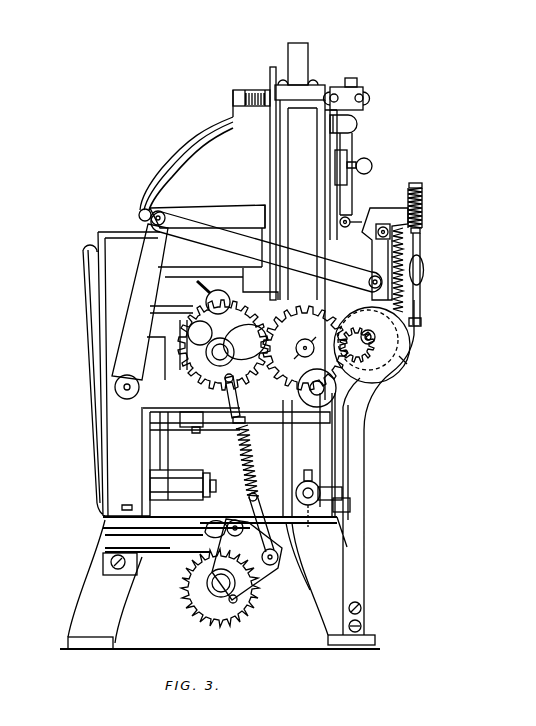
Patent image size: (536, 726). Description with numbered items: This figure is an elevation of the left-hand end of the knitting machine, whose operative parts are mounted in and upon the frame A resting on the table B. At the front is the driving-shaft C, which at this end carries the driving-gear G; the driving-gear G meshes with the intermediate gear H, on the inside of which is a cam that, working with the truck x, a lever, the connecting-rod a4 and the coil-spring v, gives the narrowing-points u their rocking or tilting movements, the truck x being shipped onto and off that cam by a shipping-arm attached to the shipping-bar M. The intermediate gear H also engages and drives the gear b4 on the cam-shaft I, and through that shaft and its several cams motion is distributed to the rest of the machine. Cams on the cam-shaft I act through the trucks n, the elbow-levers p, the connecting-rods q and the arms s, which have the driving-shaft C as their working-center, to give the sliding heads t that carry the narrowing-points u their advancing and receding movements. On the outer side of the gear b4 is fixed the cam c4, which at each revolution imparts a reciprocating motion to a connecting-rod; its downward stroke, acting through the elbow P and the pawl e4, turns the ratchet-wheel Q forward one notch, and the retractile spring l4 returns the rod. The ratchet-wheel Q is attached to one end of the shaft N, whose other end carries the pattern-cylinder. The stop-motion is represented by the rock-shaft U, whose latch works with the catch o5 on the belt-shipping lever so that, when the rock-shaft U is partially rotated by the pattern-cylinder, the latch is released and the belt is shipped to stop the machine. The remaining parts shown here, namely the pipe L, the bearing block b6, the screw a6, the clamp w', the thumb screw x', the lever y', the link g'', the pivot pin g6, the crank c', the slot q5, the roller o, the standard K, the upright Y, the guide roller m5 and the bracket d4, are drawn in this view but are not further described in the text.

The frame A is at (237, 346).
The pipe L is at (200, 135).
The bearing block b6 is at (347, 98).
The adjusting screw a6 is at (354, 74).
The clamp w' is at (358, 129).
The thumb screw x' is at (355, 163).
The lever y' is at (357, 174).
The narrowing-point u is at (374, 254).
The sliding head t is at (385, 224).
The coil-spring v is at (423, 211).
The arm s is at (391, 270).
The connecting-rod a4 is at (421, 283).
The link g'' is at (207, 216).
The pivot pin g6 is at (146, 216).
The connecting-rod q is at (266, 252).
The elbow-lever p is at (152, 311).
The crank c' is at (213, 297).
The gear b4 is at (223, 345).
The cam c4 is at (245, 342).
The truck n is at (200, 333).
The cam-shaft I is at (220, 352).
The intermediate gear H is at (305, 348).
The driving-gear G is at (354, 322).
The cam disk F is at (372, 345).
The driving-shaft C is at (368, 336).
The slot q5 is at (408, 364).
The truck x is at (317, 388).
The roller o is at (242, 400).
The shipping-bar M is at (236, 420).
The standard K is at (190, 443).
The table B is at (183, 492).
The retractile spring l4 is at (255, 488).
The upright Y is at (350, 462).
The guide roller m5 is at (319, 498).
The catch o5 is at (351, 506).
The rock-shaft U is at (298, 556).
The elbow P is at (247, 559).
The pawl e4 is at (216, 528).
The ratchet-wheel Q is at (220, 588).
The shaft N is at (222, 586).
The bracket d4 is at (156, 561).